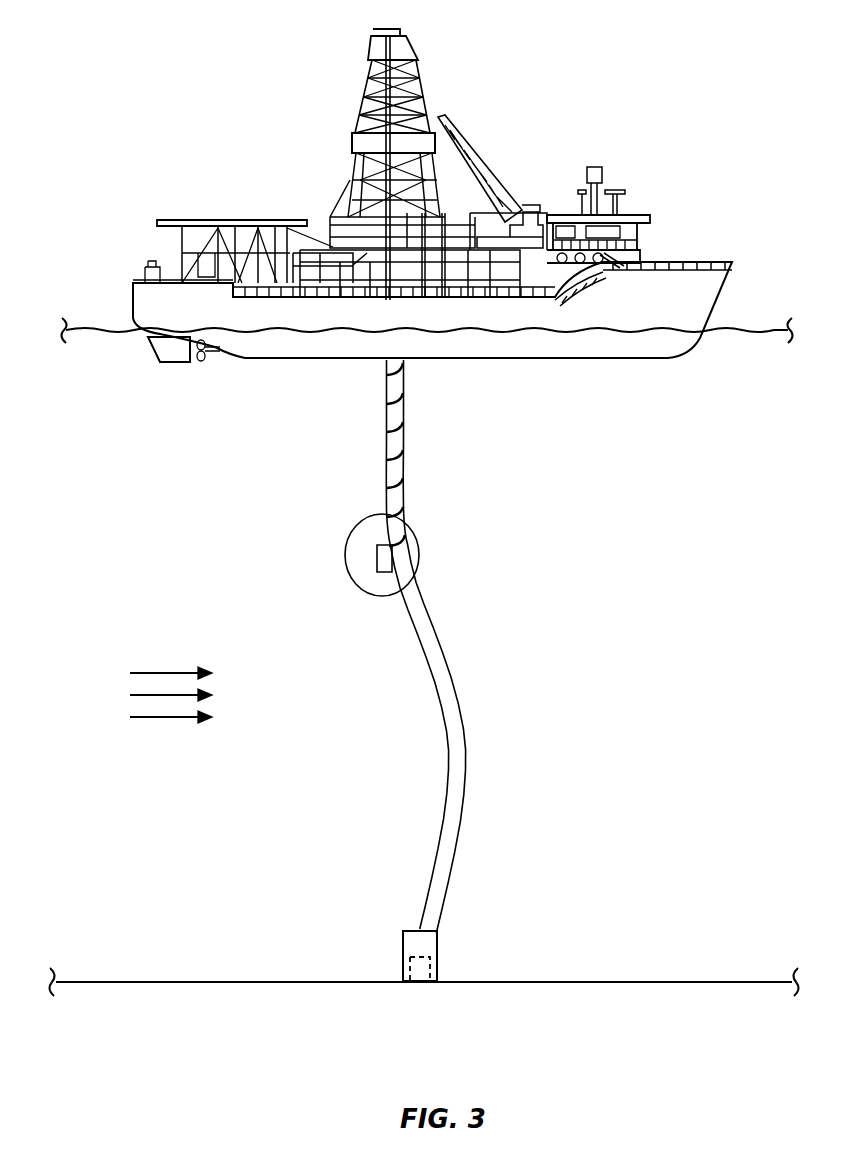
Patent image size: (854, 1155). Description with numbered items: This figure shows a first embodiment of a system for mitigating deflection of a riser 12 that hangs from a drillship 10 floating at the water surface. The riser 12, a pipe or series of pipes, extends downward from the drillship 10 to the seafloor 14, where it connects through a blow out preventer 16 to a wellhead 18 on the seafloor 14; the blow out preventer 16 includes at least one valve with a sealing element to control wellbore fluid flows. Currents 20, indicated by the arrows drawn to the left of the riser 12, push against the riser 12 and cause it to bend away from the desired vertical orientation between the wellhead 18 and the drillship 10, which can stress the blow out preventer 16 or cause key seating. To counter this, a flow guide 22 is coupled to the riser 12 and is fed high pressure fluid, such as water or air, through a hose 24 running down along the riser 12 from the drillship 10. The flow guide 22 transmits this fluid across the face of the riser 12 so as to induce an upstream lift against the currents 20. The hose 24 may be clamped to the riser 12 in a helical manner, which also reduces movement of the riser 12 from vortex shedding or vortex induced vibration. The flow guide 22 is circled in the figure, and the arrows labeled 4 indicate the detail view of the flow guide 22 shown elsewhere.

The drillship 10 is at (583, 70).
The riser 12 is at (461, 690).
The seafloor 14 is at (770, 1014).
The blow out preventer 16 is at (437, 937).
The wellhead 18 is at (432, 964).
The currents 20 is at (170, 672).
The flow guide 22 is at (377, 560).
The hose 24 is at (406, 450).
The viewing direction of FIG. 4 is at (395, 517).